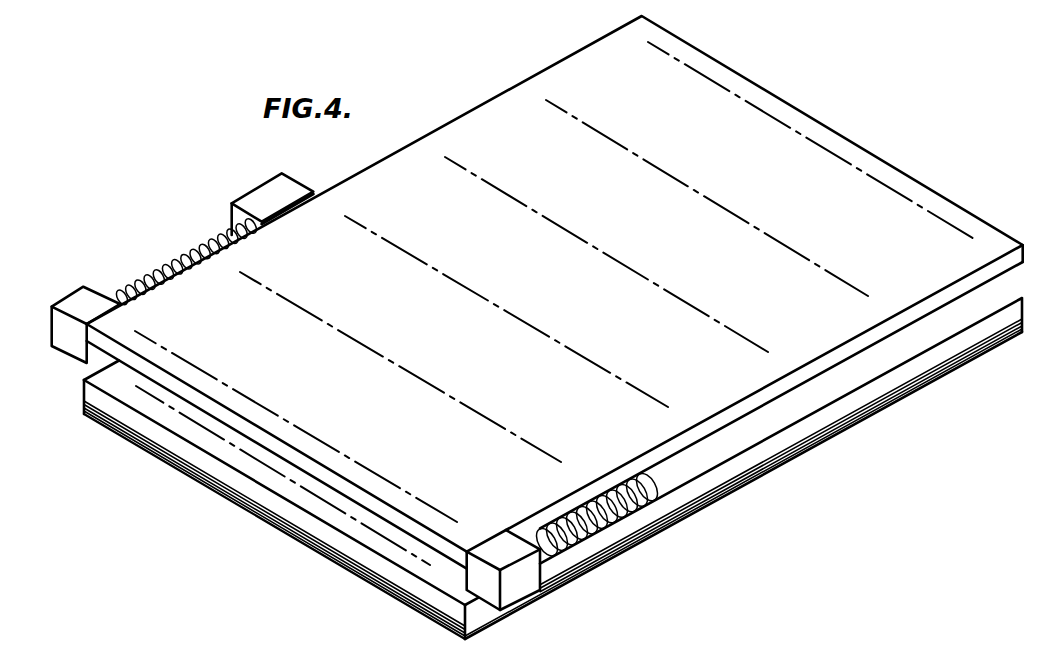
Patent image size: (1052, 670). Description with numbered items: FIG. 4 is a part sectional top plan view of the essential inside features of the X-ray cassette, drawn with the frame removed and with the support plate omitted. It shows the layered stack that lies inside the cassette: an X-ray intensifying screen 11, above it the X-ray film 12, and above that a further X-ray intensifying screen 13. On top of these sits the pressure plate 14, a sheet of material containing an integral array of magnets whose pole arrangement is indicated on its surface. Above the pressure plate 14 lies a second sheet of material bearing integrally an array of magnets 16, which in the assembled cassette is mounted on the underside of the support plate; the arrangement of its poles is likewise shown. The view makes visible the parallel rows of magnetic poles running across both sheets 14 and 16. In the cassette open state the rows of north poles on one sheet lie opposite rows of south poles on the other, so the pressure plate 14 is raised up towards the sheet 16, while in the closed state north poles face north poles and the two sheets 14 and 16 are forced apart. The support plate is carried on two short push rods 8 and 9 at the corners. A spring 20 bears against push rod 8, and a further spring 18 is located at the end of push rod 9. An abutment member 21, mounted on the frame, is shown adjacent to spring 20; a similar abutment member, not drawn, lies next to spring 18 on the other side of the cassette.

The sheet of material bearing integrally an array of magnets 16 is at (468, 115).
The push rod 8 is at (87, 292).
The push rod 9 is at (528, 587).
The abutment member 21 is at (280, 177).
The spring 20 is at (202, 245).
The spring 18 is at (560, 527).
The pressure plate 14 is at (747, 467).
The X-ray intensifying screen 13 is at (117, 428).
The X-ray film 12 is at (153, 445).
The X-ray intensifying screen 11 is at (193, 477).